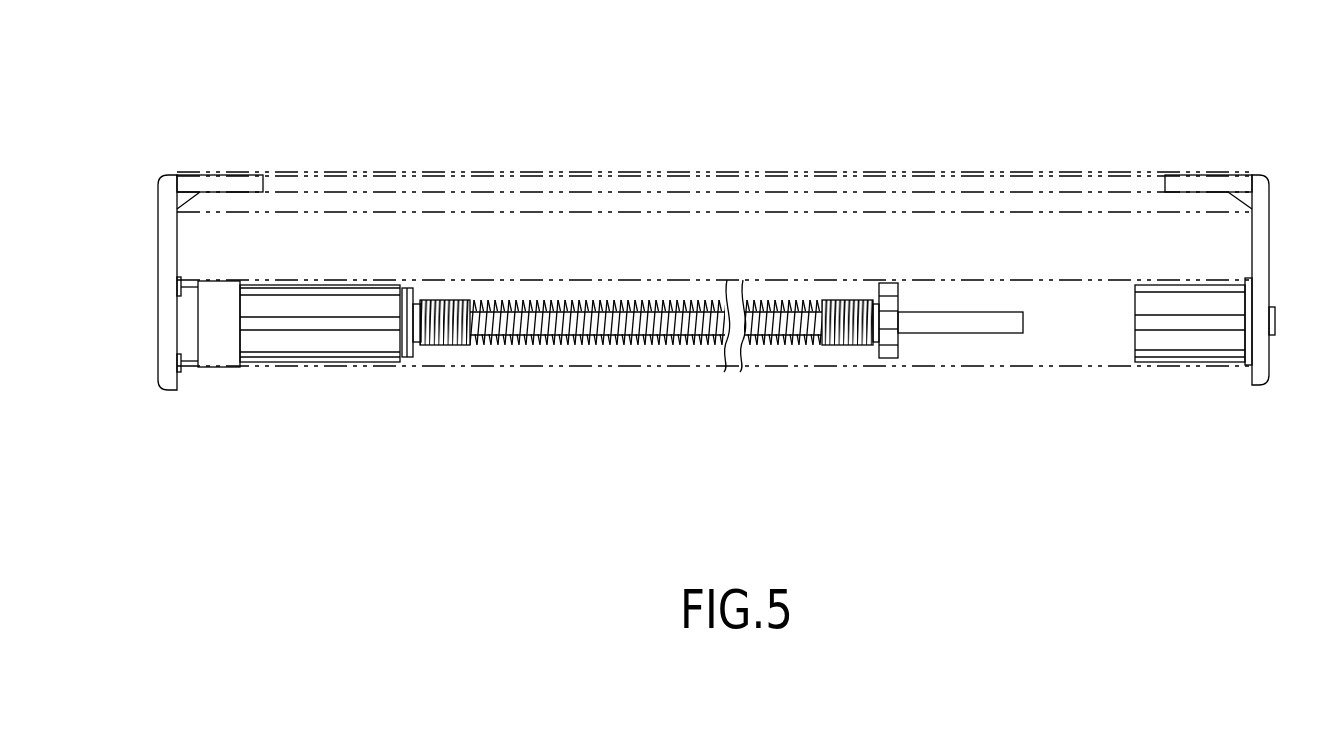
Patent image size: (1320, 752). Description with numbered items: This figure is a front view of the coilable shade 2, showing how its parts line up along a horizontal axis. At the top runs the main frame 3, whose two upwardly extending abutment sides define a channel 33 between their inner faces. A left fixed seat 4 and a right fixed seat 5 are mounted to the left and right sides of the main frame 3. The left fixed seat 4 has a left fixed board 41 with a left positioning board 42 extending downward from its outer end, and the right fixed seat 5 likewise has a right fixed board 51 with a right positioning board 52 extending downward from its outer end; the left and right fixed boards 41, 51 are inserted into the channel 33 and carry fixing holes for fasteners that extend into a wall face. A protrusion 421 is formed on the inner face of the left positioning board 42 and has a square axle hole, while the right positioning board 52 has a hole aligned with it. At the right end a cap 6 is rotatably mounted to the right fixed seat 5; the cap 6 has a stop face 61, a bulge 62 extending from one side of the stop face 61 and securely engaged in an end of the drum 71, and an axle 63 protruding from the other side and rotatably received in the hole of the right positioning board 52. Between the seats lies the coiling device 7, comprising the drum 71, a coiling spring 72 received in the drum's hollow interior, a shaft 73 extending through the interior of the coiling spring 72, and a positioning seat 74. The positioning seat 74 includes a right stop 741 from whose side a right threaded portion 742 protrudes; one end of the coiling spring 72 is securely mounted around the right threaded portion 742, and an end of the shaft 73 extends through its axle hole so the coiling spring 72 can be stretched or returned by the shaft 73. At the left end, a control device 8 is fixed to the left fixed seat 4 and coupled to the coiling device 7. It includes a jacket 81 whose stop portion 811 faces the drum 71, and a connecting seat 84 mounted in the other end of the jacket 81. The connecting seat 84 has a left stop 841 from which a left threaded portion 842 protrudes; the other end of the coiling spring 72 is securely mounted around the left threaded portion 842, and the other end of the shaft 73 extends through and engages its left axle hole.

The coilable shade 2 is at (705, 116).
The main frame 3 is at (755, 170).
The channel 33 is at (1053, 175).
The left fixed seat 4 is at (151, 175).
The left fixed board 41 is at (230, 188).
The left positioning board 42 is at (166, 282).
The protrusion 421 is at (188, 323).
The right fixed seat 5 is at (1276, 162).
The right fixed board 51 is at (1188, 178).
The right positioning board 52 is at (1261, 258).
The cap 6 is at (1179, 275).
The stop face 61 is at (1247, 353).
The bulge 62 is at (1190, 305).
The axle 63 is at (1273, 323).
The coiling device 7 is at (750, 384).
The drum 71 is at (797, 365).
The coiling spring 72 is at (665, 342).
The shaft 73 is at (603, 340).
The positioning seat 74 is at (874, 292).
The right stop 741 is at (890, 350).
The right threaded portion 742 is at (848, 342).
The control device 8 is at (323, 371).
The jacket 81 is at (298, 342).
The stop portion 811 is at (220, 348).
The connecting seat 84 is at (418, 290).
The left stop 841 is at (407, 352).
The left threaded portion 842 is at (446, 309).